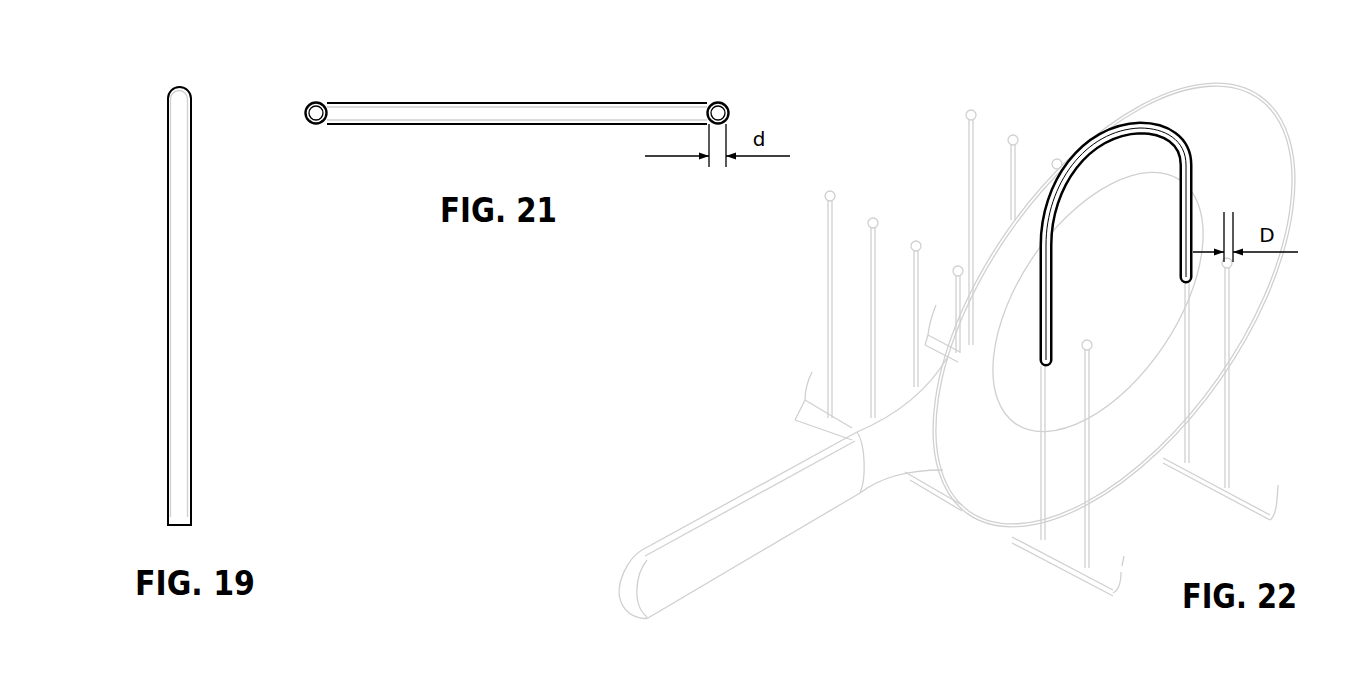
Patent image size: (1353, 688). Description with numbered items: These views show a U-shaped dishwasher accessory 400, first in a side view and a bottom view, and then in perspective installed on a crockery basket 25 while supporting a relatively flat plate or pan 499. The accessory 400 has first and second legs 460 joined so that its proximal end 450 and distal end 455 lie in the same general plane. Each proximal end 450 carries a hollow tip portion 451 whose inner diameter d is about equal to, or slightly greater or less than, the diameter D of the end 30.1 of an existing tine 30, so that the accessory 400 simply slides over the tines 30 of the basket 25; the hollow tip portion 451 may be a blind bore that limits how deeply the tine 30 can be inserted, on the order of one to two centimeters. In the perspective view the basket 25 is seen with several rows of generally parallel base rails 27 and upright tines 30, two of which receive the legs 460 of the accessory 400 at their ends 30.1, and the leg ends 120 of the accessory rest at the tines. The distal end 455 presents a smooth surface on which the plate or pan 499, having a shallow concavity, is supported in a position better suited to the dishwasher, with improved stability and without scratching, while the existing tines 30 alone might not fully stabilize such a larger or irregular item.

In FIG. 22, the crockery basket 25 is at (983, 138).
In FIG. 22, the base rails 27 is at (1067, 582).
In FIG. 22, the tines 30 is at (1045, 470).
In FIG. 22, the end of tine 30.1 is at (1235, 263).
In FIG. 22, the tube end 120 is at (1176, 272).
In FIG. 21, the accessory 400 is at (495, 62).
In FIG. 22, the accessory 400 is at (1141, 233).
In FIG. 19, the proximal end 450 is at (190, 519).
In FIG. 21, the hollow tip portion 451 is at (318, 101).
In FIG. 21, the distal end 455 is at (503, 110).
In FIG. 19, the legs 460 is at (189, 297).
In FIG. 22, the plate or pan 499 is at (1272, 153).